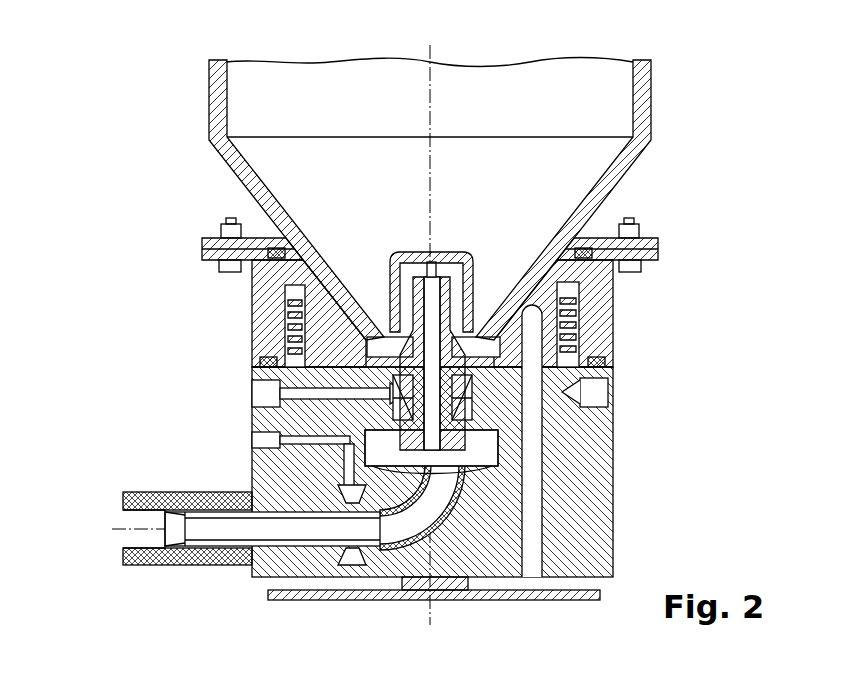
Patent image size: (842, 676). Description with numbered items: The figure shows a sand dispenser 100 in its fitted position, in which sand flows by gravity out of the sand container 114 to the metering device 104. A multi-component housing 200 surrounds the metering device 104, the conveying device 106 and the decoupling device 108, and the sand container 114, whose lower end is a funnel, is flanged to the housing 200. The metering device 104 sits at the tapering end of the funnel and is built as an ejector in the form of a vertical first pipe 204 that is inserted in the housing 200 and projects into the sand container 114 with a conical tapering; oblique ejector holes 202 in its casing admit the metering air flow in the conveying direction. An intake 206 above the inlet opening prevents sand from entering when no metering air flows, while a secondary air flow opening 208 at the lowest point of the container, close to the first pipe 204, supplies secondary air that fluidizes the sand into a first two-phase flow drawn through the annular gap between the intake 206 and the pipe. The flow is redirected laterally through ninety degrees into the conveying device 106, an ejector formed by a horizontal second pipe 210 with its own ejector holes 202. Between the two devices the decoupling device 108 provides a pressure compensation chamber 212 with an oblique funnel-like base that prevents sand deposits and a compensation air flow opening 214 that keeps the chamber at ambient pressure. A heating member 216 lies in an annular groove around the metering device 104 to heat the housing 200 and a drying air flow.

The sand dispenser 100 is at (378, 340).
The metering device 104 is at (383, 160).
The conveying device 106 is at (120, 468).
The decoupling device 108 is at (490, 443).
The sand container 114 is at (640, 100).
The housing 200 is at (388, 426).
The ejector holes 202 is at (606, 393).
The first pipe 204 is at (495, 350).
The intake 206 is at (437, 258).
The secondary air flow opening 208 is at (487, 337).
The second pipe 210 is at (293, 553).
The pressure compensation chamber 212 is at (431, 448).
The compensation air flow opening 214 is at (497, 470).
The heating member 216 is at (290, 329).